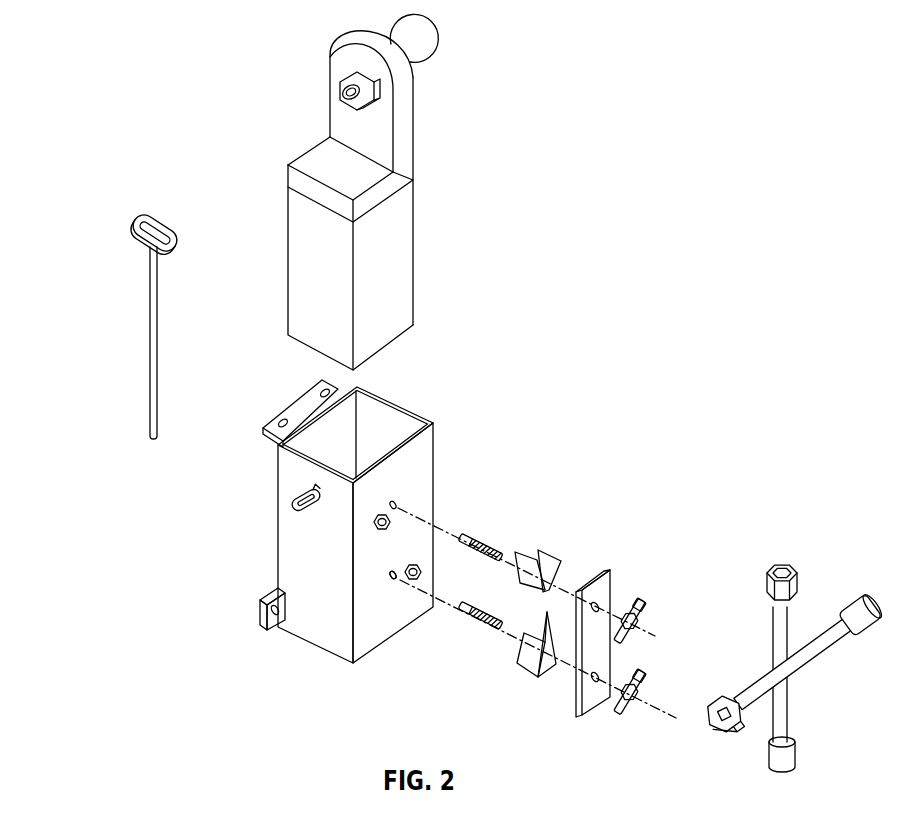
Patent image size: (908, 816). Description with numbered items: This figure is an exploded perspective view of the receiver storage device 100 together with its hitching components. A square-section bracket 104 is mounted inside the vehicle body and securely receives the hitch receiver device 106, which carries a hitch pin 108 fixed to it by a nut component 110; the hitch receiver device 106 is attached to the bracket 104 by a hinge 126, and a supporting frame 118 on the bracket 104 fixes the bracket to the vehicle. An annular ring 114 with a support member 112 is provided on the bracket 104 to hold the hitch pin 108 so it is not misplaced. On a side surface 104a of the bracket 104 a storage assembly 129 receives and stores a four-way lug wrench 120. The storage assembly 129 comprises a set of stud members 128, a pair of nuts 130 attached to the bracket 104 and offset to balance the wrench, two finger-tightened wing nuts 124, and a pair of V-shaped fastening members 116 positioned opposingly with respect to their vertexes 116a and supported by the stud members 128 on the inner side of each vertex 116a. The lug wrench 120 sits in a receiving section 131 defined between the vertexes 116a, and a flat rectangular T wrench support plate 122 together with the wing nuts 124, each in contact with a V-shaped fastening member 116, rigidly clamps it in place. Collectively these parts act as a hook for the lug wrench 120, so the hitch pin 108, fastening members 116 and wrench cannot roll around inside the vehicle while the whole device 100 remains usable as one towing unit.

The receiver storage device 100 is at (186, 55).
The bracket 104 is at (436, 430).
The surface of the bracket 104a is at (414, 470).
The hitch receiver device 106 is at (400, 270).
The hitch pin 108 is at (425, 48).
The nut component 110 is at (338, 92).
The support member 112 is at (158, 343).
The annular ring 114 is at (292, 505).
The V-shaped fastening member 116 is at (550, 553).
The vertex 116a is at (547, 612).
The supporting frame 118 is at (260, 612).
The four-way lug wrench 120 is at (847, 605).
The T wrench support plate 122 is at (588, 690).
The wing nut 124 is at (645, 598).
The hinge 126 is at (303, 417).
The stud member 128 is at (478, 538).
The storage assembly 129 is at (476, 484).
The nut 130 is at (408, 585).
The receiving section 131 is at (394, 543).